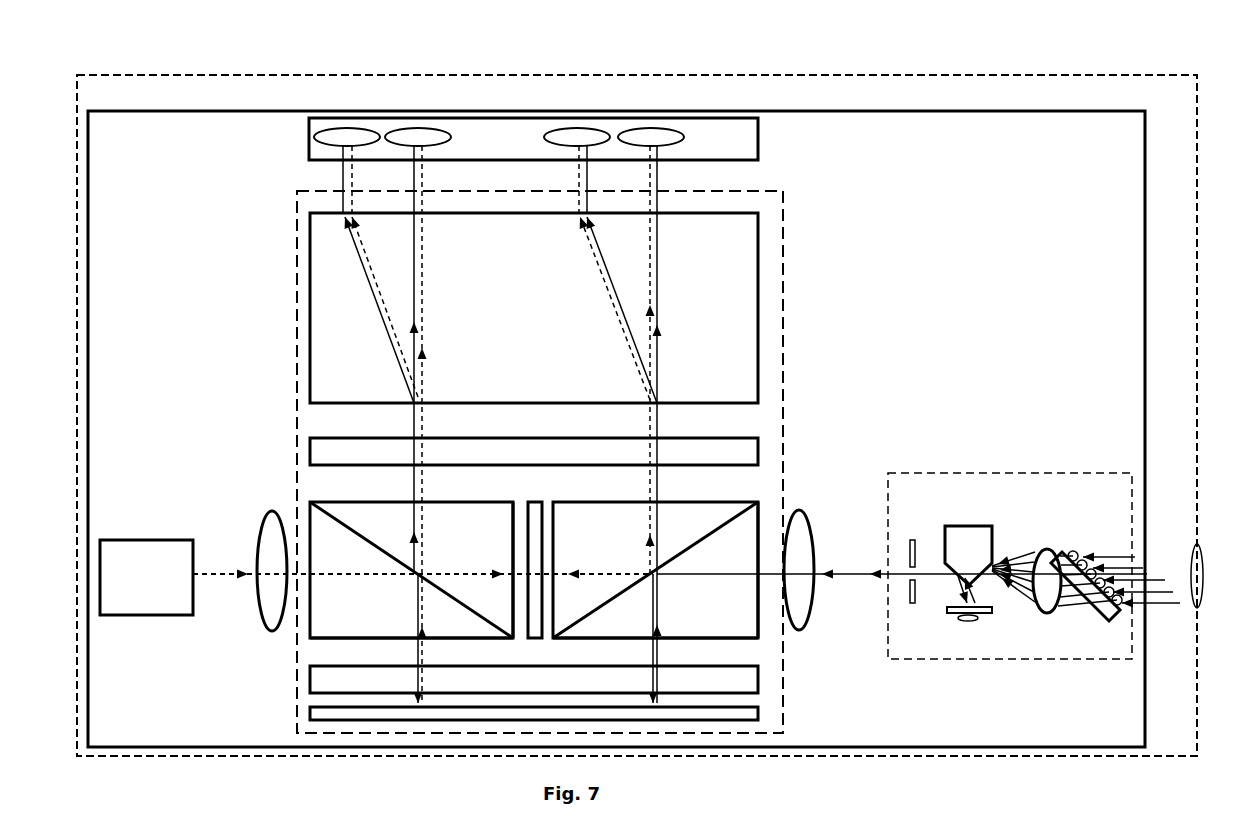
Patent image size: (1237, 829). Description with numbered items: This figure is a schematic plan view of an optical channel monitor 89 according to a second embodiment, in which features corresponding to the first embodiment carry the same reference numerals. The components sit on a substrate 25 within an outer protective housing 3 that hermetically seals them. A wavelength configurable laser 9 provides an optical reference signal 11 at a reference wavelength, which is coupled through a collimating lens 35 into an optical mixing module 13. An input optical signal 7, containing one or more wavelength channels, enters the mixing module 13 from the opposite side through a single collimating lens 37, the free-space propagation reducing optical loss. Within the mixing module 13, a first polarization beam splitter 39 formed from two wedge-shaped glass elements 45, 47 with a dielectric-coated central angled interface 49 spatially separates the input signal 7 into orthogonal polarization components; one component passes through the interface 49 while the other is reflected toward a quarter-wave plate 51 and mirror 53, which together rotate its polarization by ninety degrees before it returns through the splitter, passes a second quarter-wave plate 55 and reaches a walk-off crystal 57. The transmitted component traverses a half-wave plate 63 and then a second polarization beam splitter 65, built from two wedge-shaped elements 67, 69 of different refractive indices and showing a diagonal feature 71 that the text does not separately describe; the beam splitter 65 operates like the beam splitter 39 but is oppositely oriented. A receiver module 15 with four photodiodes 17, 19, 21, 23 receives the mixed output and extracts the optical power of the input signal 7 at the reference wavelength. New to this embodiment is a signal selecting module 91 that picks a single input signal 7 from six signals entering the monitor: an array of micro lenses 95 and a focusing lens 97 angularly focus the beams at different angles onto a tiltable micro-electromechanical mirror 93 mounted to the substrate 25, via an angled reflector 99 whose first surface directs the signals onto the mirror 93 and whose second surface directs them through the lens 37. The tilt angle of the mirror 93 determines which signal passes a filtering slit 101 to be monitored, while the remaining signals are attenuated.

The outer protective housing 3 is at (213, 73).
The substrate 25 is at (140, 107).
The optical channel monitor 89 is at (527, 60).
The receiver module 15 is at (760, 137).
The photodiode 23 is at (353, 128).
The photodiode 21 is at (423, 128).
The photodiode 19 is at (583, 128).
The photodiode 17 is at (647, 128).
The optical mixing module 13 is at (782, 213).
The walk-off crystal 57 is at (758, 322).
The second quarter-wave plate 55 is at (758, 453).
The second polarization beam splitter 65 is at (312, 520).
The splitter interface 71 is at (358, 532).
The wedge-shaped element 67 is at (452, 520).
The wedge-shaped element 69 is at (323, 625).
The half-wave plate 63 is at (537, 502).
The second wedge-shaped element 47 is at (643, 512).
The central angled interface 49 is at (705, 535).
The first polarization beam splitter 39 is at (762, 520).
The wedge-shaped element 45 is at (743, 628).
The quarter-wave plate 51 is at (308, 683).
The mirror 53 is at (758, 707).
The wavelength configurable laser 9 is at (148, 540).
The optical reference signal 11 is at (218, 572).
The collimating lens 35 is at (270, 520).
The input optical signal 7 is at (837, 568).
The collimating lens 37 is at (800, 530).
The signal selecting module 91 is at (1047, 473).
The filtering slit 101 is at (912, 540).
The angled reflector 99 is at (970, 526).
The micro-electromechanical mirror 93 is at (948, 608).
The focusing lens 97 is at (1047, 548).
The array of micro lenses 95 is at (1097, 597).